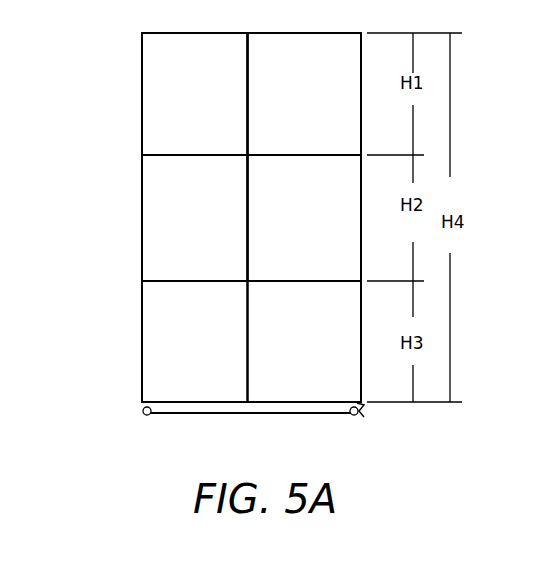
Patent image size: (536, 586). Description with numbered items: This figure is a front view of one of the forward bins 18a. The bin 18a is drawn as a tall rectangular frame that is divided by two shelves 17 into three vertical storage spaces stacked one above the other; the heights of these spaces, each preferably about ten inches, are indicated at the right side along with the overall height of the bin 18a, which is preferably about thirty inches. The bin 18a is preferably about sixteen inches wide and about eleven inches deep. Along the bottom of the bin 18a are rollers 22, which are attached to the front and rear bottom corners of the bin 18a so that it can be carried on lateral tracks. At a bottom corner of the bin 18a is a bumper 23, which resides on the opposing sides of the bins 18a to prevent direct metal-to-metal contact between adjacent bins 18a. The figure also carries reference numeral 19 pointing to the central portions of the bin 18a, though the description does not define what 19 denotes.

The forward bin 18a is at (106, 138).
The shelf 17 is at (188, 155).
The panel 19 is at (249, 68).
The roller 22 is at (152, 414).
The bumper 23 is at (365, 417).